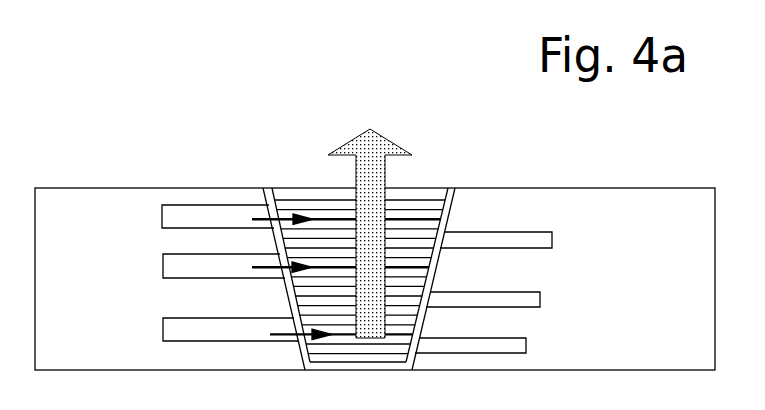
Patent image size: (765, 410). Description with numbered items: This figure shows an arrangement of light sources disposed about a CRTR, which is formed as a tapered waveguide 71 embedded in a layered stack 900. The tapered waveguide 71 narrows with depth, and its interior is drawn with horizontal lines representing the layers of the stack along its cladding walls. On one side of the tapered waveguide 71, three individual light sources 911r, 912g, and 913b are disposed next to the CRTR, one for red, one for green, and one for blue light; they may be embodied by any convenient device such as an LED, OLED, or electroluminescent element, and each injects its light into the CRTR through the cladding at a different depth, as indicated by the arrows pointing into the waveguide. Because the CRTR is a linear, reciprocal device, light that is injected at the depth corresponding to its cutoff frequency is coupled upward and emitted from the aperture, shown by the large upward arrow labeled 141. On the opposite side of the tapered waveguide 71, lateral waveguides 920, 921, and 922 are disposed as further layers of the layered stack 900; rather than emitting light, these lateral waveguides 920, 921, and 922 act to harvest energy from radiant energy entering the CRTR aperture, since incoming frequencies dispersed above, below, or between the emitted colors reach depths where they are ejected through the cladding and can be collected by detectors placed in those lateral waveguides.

The output light / emitted light direction arrow 141 is at (370, 209).
The red light source 911r is at (301, 217).
The green light source 912g is at (296, 265).
The blue light source 913b is at (288, 329).
The lateral waveguide 920 is at (496, 239).
The lateral waveguide 921 is at (483, 297).
The lateral waveguide 922 is at (470, 345).
The tapered waveguide 71 is at (450, 210).
The layered stack 900 is at (375, 279).